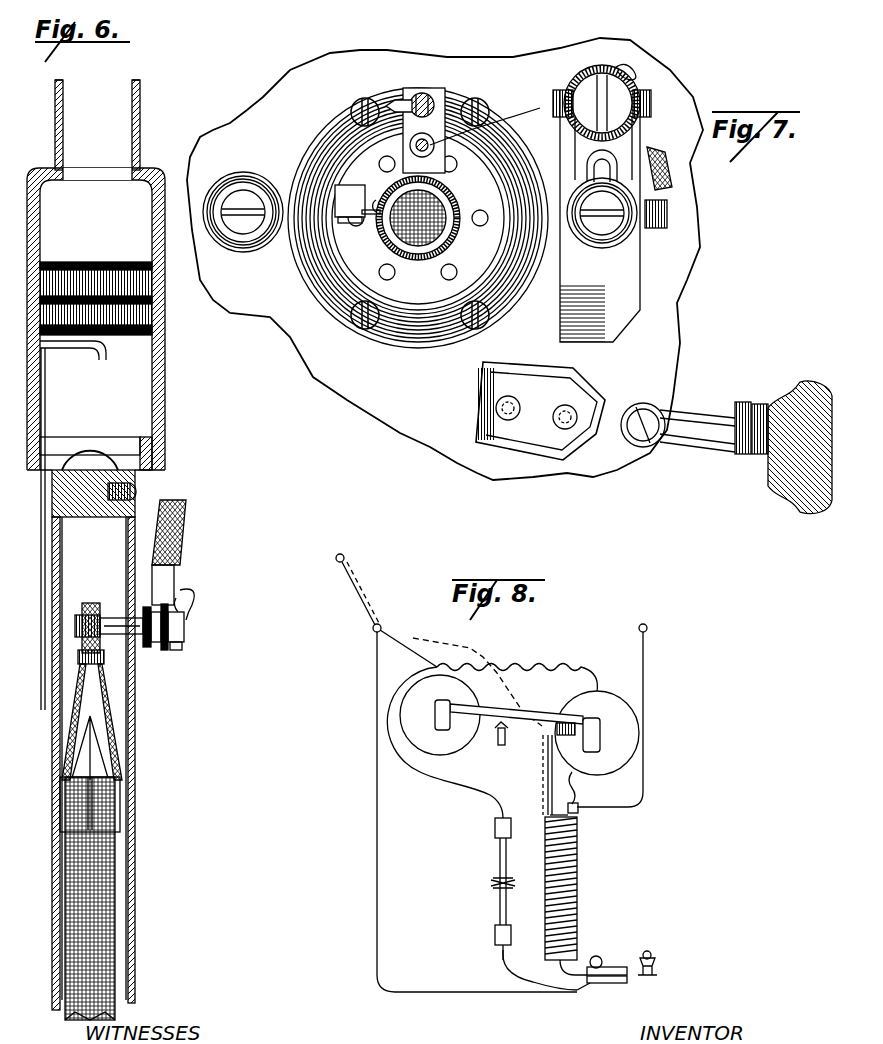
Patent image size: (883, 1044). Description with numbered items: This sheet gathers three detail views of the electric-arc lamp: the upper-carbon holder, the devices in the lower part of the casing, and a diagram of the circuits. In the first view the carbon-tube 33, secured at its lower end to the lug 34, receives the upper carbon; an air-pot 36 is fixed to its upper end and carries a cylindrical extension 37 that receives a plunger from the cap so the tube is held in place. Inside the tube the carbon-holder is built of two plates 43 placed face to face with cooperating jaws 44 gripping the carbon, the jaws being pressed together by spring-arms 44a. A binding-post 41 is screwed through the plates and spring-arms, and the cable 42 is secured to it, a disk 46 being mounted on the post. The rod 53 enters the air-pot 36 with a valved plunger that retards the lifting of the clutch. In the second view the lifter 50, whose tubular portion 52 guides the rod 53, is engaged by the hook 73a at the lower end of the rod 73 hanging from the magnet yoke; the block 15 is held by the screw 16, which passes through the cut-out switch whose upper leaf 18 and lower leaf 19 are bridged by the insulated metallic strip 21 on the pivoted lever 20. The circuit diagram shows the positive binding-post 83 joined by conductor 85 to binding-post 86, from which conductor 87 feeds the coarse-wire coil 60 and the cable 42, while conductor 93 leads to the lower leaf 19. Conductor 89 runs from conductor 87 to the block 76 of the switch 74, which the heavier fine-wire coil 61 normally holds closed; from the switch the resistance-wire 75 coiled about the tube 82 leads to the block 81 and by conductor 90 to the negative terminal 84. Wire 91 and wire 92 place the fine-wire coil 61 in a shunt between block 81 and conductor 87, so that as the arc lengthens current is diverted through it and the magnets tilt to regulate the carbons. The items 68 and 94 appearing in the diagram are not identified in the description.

In FIG. 6, the cylindrical extension 37 is at (97, 125).
In FIG. 6, the air-pot 36 is at (165, 378).
In FIG. 6, the rod 53 is at (27, 529).
In FIG. 7, the rod 53 is at (486, 116).
In FIG. 6, the carbon-tube 33 is at (135, 886).
In FIG. 7, the carbon-tube 33 is at (446, 236).
In FIG. 6, the plates 43 is at (82, 690).
In FIG. 6, the spring-arms 44a is at (148, 738).
In FIG. 6, the binding-post 41 is at (118, 615).
In FIG. 6, the metal block 15 is at (186, 630).
In FIG. 6, the disk 46 is at (165, 650).
In FIG. 6, the connecting cable 42 is at (186, 512).
In FIG. 8, the connecting cable 42 is at (496, 881).
In FIG. 6, the jaws 44 is at (60, 812).
In FIG. 7, the rod 73 is at (438, 88).
In FIG. 7, the lifter 50 is at (424, 92).
In FIG. 7, the hook 73a is at (410, 100).
In FIG. 7, the lug 34 is at (338, 188).
In FIG. 7, the tubular portion 52 is at (355, 138).
In FIG. 7, the upper leaf 18 is at (630, 273).
In FIG. 8, the upper leaf 18 is at (610, 961).
In FIG. 7, the tube 82 is at (590, 80).
In FIG. 8, the tube 82 is at (560, 962).
In FIG. 7, the resistance-wire 75 is at (630, 72).
In FIG. 8, the resistance-wire 75 is at (577, 860).
In FIG. 7, the screw 16 is at (602, 245).
In FIG. 7, the insulated metallic strip 21 is at (570, 411).
In FIG. 7, the lever 20 is at (692, 418).
In FIG. 8, the lever 20 is at (663, 961).
In FIG. 8, the positive binding-post 83 is at (355, 578).
In FIG. 8, the conductor 85 is at (352, 594).
In FIG. 8, the binding-post 86 is at (391, 616).
In FIG. 8, the conductor 93 is at (477, 812).
In FIG. 8, the conductor 87 is at (408, 650).
In FIG. 8, the wire 92 is at (525, 669).
In FIG. 8, the conductor 89 is at (492, 606).
In FIG. 8, the coarse-wire coil 60 is at (433, 719).
In FIG. 8, the fine-wire coil 61 is at (597, 733).
In FIG. 8, the switch 74 is at (518, 724).
In FIG. 8, the stop 68 is at (495, 744).
In FIG. 8, the block 76 is at (555, 732).
In FIG. 8, the negative binding-post 84 is at (657, 615).
In FIG. 8, the conductor 90 is at (643, 793).
In FIG. 8, the wire 91 is at (578, 790).
In FIG. 8, the block 81 is at (545, 810).
In FIG. 8, the conductor 94 is at (503, 955).
In FIG. 8, the lower leaf 19 is at (605, 985).